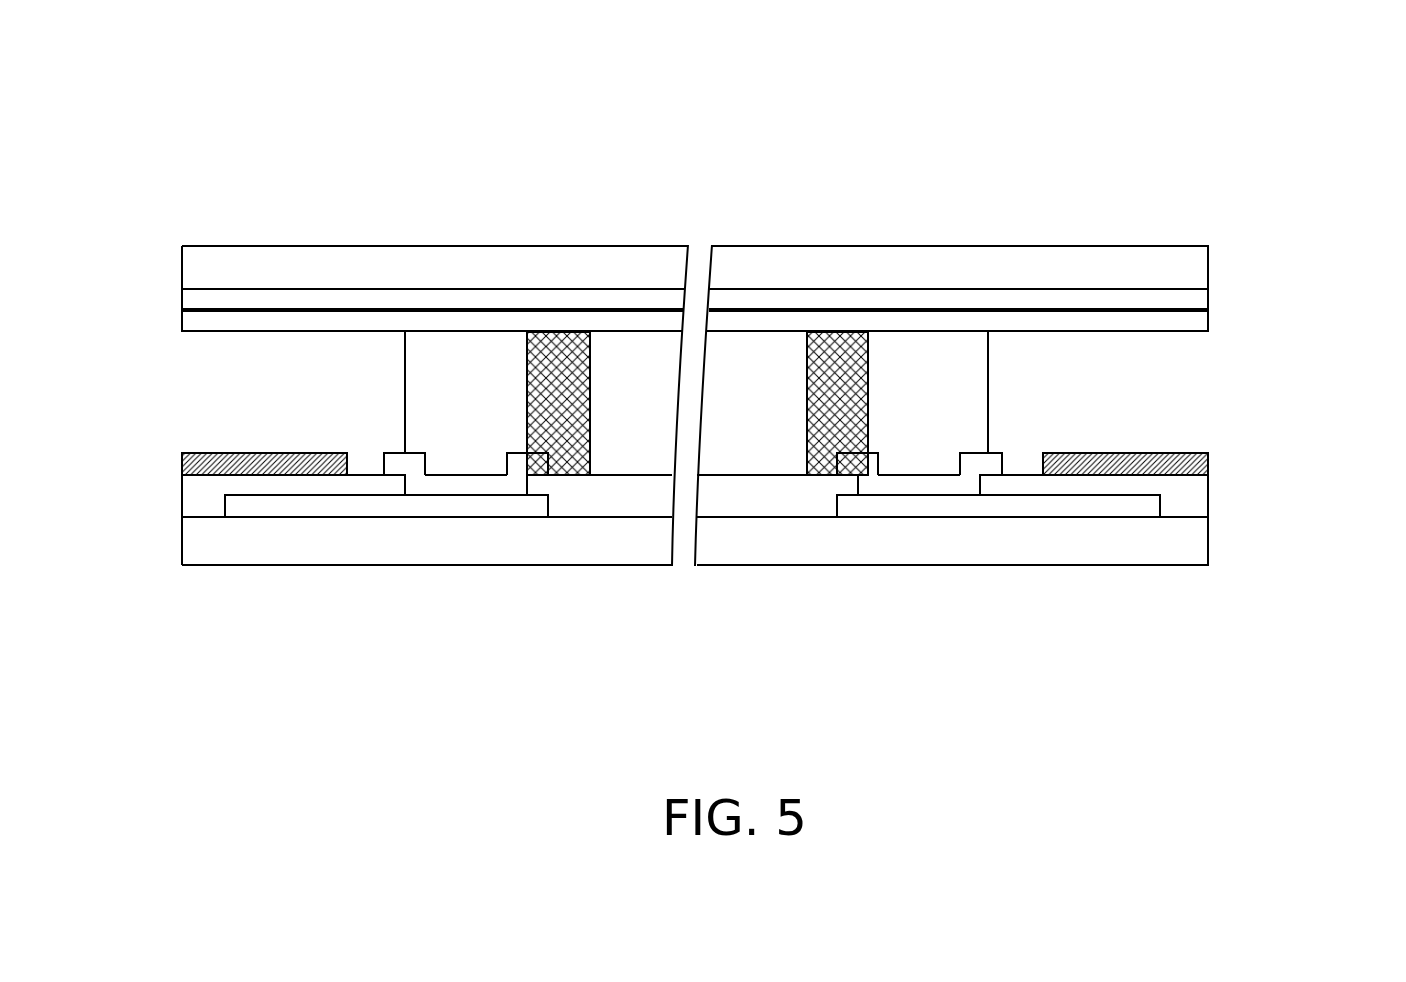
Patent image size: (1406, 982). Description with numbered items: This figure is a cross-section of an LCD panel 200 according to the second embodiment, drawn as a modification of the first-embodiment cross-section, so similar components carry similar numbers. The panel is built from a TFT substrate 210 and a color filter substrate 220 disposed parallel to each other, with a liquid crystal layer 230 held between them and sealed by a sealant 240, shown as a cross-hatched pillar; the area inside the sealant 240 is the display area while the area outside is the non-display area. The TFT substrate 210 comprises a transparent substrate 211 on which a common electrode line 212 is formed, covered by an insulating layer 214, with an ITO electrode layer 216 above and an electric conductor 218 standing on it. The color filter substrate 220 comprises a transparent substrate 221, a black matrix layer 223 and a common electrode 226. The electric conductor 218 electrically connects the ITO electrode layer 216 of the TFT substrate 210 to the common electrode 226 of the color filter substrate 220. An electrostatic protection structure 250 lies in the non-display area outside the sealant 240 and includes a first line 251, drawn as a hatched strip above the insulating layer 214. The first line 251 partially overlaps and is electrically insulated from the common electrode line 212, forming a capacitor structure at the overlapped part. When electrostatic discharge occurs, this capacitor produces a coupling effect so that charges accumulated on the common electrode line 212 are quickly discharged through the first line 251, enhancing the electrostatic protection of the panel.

The LCD panel 200 is at (1357, 87).
The TFT substrate 210 is at (172, 475).
The transparent substrate 211 is at (1178, 553).
The common electrode line 212 is at (945, 510).
The insulating layer 214 is at (1192, 503).
The ITO electrode layer 216 is at (867, 483).
The electric conductor 218 is at (958, 395).
The color filter substrate 220 is at (172, 248).
The transparent substrate 221 is at (1165, 258).
The black matrix layer 223 is at (1185, 295).
The common electrode 226 is at (1197, 325).
The liquid crystal layer 230 is at (752, 350).
The sealant 240 is at (845, 348).
The electrostatic protection structure 250 is at (789, 463).
The first line 251 is at (1208, 457).